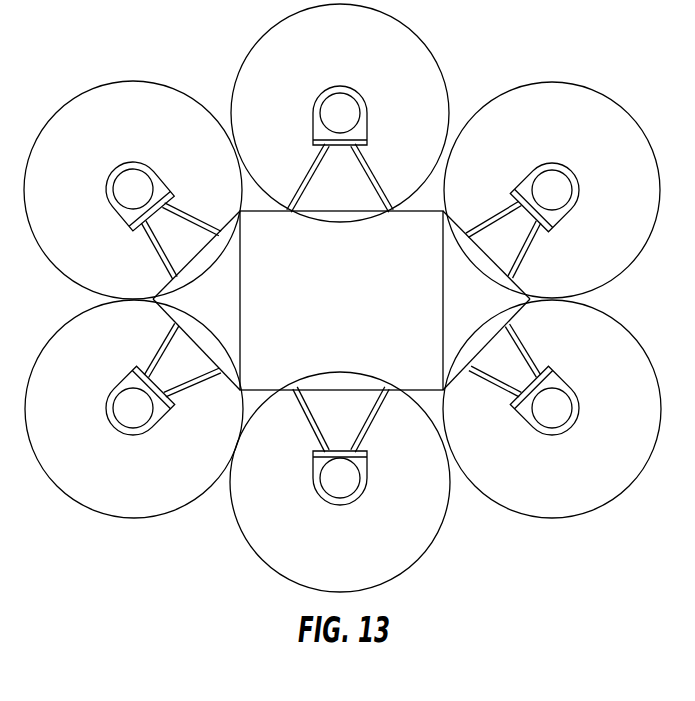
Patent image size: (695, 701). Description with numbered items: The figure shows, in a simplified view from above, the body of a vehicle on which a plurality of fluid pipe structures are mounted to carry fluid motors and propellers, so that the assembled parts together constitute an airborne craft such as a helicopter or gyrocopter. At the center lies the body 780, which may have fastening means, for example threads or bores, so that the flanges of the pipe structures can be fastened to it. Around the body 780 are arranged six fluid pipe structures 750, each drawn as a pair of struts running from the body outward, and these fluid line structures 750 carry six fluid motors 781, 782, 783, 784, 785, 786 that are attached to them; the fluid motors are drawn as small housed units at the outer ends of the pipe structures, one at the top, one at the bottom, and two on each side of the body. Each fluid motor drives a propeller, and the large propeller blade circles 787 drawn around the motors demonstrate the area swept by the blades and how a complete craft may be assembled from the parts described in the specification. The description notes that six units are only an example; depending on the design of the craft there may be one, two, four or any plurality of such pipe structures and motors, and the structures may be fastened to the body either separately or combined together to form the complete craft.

The fluid pipe structure 750 is at (367, 163).
The body 780 is at (355, 313).
The fluid motor 781 is at (135, 185).
The fluid motor 782 is at (137, 415).
The fluid motor 783 is at (558, 178).
The fluid motor 784 is at (542, 418).
The fluid motor 785 is at (345, 108).
The fluid motor 786 is at (338, 483).
The propeller blade circle 787 is at (304, 78).